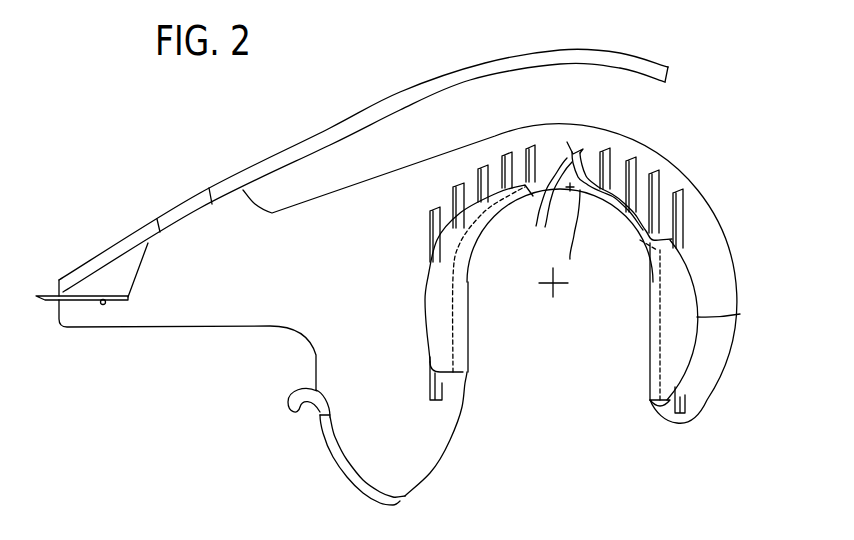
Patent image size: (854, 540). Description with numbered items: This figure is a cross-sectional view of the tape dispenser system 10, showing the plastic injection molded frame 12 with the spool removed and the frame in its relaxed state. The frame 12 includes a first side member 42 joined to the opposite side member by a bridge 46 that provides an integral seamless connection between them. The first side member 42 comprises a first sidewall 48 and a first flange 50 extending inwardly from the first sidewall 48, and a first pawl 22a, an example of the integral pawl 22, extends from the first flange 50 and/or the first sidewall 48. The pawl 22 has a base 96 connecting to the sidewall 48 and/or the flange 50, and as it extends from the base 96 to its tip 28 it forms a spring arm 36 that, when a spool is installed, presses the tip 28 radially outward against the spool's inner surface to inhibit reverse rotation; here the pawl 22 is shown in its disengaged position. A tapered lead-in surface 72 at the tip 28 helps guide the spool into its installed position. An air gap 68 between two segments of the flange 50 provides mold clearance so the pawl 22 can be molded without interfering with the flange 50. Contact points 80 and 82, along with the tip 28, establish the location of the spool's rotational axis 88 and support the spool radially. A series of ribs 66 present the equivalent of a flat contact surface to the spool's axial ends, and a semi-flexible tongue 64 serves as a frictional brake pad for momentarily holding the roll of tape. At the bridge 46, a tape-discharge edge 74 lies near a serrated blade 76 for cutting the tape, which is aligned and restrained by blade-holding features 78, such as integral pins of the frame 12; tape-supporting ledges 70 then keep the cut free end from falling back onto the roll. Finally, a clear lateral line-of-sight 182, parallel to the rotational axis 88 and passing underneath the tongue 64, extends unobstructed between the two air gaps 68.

The tape dispenser system 10 is at (103, 120).
The frame 12 is at (690, 174).
The pawl 22 is at (536, 226).
The first pawl 22a is at (545, 227).
The tip 28 is at (566, 145).
The spring arm 36 is at (583, 195).
The first side member 42 is at (687, 144).
The bridge 46 is at (100, 250).
The first sidewall 48 is at (705, 243).
The first flange 50 is at (425, 313).
The tongue 64 is at (412, 86).
The ribs 66 is at (463, 182).
The air gap 68 is at (550, 160).
The tape-supporting ledges 70 is at (310, 390).
The lead-in surface 72 is at (571, 147).
The tape-discharge edge 74 is at (57, 290).
The serrated blade 76 is at (47, 303).
The blade-holding features 78 is at (104, 304).
The contact point 80 is at (437, 373).
The contact point 82 is at (670, 410).
The rotational axis 88 is at (553, 296).
The base 96 is at (642, 242).
The lateral line-of-sight 182 is at (570, 259).